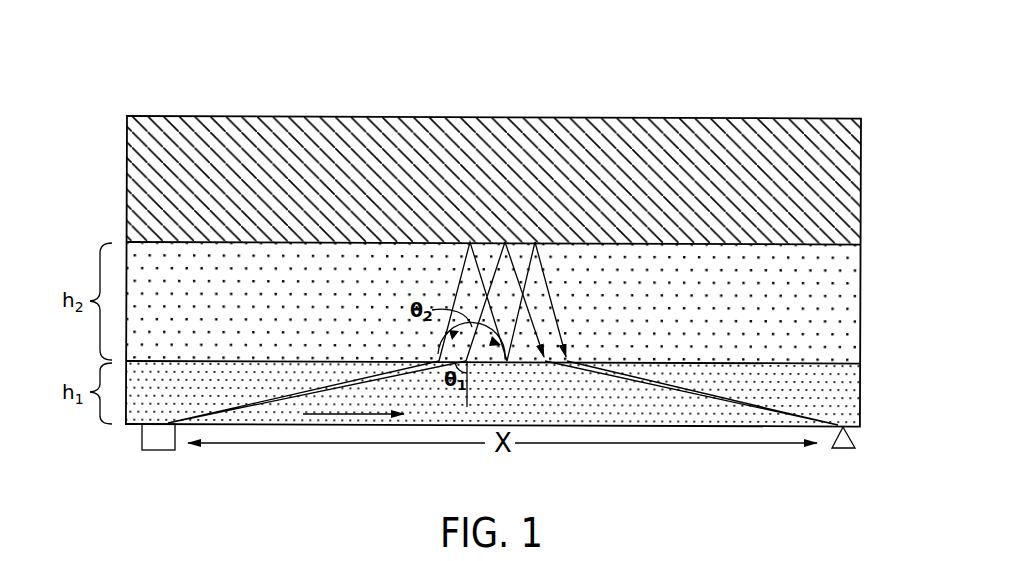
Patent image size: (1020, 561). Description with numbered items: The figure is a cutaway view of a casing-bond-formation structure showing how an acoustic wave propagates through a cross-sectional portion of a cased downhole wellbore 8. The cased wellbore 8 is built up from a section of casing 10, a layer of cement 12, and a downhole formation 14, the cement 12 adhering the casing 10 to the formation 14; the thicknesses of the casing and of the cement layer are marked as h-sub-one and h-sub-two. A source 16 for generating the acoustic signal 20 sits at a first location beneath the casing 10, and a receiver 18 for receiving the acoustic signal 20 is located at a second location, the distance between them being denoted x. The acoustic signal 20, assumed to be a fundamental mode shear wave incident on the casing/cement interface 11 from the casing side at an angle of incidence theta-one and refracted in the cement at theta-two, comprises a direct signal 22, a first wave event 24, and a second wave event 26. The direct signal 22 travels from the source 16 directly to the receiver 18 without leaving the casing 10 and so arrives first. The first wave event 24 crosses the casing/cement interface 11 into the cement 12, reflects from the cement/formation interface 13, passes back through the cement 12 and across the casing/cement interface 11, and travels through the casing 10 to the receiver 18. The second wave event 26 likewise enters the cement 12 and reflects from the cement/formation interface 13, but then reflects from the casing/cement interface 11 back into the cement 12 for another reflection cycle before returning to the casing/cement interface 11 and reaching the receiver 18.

The cased downhole wellbore 8 is at (661, 69).
The casing 10 is at (840, 397).
The casing/cement interface 11 is at (834, 362).
The cement 12 is at (840, 300).
The cement/formation interface 13 is at (833, 242).
The downhole formation 14 is at (840, 175).
The source 16 is at (164, 455).
The receiver 18 is at (846, 450).
The acoustic signal 20 is at (181, 414).
The direct signal 22 is at (352, 417).
The first wave event 24 is at (525, 300).
The second wave event 26 is at (557, 320).